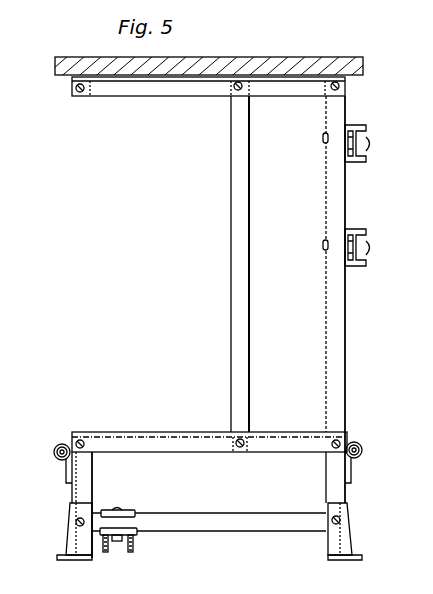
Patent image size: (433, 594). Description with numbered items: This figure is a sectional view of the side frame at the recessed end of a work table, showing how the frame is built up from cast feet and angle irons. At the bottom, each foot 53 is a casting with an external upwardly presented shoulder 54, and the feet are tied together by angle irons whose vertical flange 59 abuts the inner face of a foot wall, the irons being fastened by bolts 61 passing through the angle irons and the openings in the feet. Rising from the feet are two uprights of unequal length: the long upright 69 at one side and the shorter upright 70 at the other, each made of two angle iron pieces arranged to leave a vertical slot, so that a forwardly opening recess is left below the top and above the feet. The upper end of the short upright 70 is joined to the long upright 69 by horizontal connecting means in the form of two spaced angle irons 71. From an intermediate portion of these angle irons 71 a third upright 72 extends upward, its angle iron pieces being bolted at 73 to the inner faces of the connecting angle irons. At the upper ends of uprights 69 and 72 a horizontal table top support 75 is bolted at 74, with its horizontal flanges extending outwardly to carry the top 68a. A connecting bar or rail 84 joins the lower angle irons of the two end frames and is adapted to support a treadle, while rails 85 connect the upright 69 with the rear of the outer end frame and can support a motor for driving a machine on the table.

The top 68a is at (303, 57).
The horizontal table top support 75 is at (188, 98).
The bolt 74 is at (244, 89).
The third upright 72 is at (240, 328).
The upright 69 is at (345, 358).
The rail 85 is at (352, 163).
The angle iron 71 is at (160, 443).
The bolt 73 is at (238, 448).
The upright 70 is at (92, 492).
The shoulder 54 is at (72, 502).
The foot 53 is at (70, 543).
The bolt 61 is at (78, 522).
The vertical flange 59 is at (205, 528).
The connecting bar or rail 84 is at (135, 552).